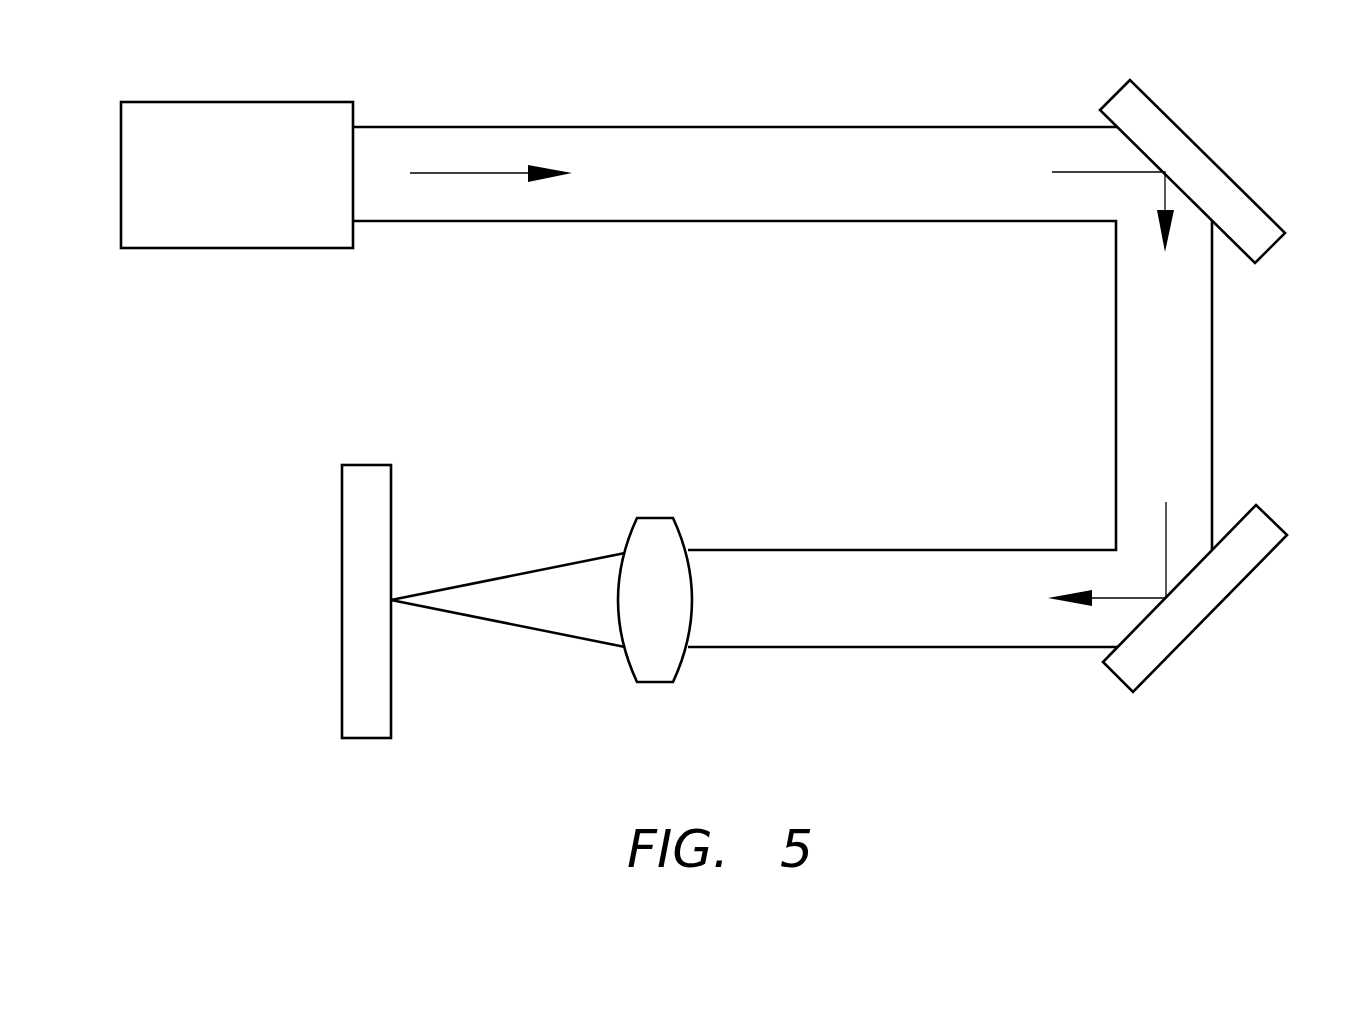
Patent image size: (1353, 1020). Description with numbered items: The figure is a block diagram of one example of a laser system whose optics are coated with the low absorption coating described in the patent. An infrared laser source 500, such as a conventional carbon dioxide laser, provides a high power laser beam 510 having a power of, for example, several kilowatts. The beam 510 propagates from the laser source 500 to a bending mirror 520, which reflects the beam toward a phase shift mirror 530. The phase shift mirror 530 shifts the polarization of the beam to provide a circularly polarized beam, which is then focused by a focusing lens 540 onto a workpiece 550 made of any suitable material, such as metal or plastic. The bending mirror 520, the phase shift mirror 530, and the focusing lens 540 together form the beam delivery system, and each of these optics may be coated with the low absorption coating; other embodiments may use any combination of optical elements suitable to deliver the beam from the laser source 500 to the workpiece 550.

The infrared laser source 500 is at (237, 101).
The high power laser beam 510 is at (575, 125).
The bending mirror 520 is at (1208, 155).
The phase shift mirror 530 is at (1193, 633).
The focusing lens 540 is at (657, 517).
The workpiece 550 is at (363, 463).